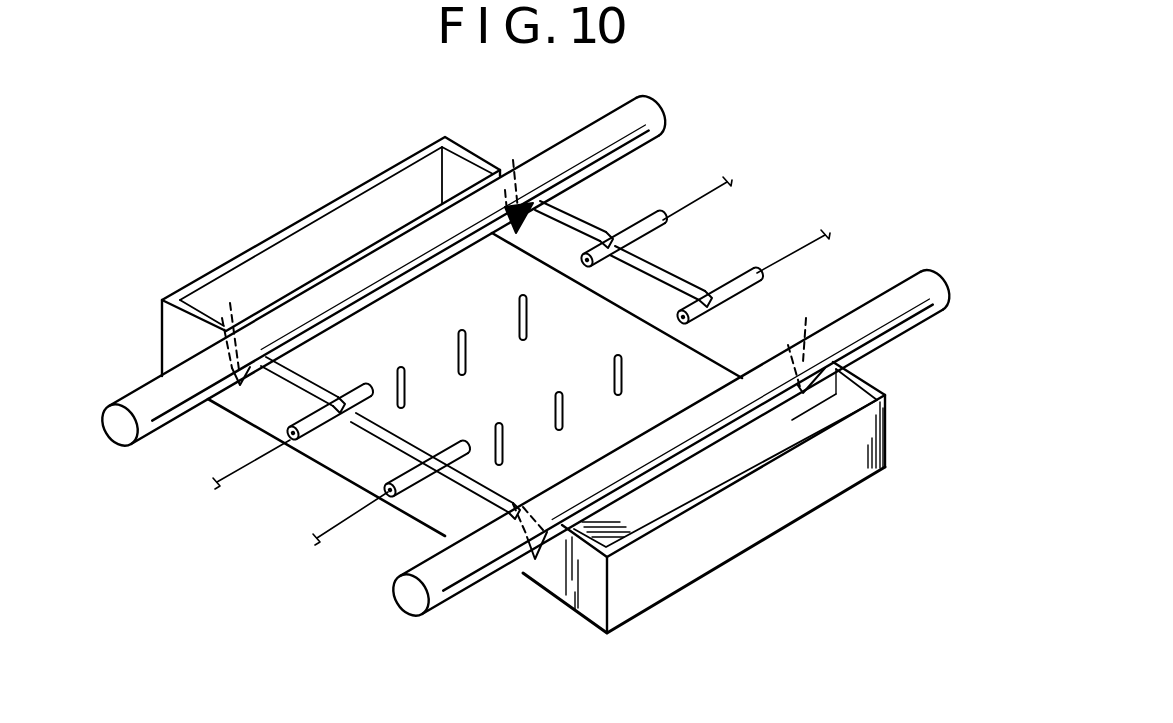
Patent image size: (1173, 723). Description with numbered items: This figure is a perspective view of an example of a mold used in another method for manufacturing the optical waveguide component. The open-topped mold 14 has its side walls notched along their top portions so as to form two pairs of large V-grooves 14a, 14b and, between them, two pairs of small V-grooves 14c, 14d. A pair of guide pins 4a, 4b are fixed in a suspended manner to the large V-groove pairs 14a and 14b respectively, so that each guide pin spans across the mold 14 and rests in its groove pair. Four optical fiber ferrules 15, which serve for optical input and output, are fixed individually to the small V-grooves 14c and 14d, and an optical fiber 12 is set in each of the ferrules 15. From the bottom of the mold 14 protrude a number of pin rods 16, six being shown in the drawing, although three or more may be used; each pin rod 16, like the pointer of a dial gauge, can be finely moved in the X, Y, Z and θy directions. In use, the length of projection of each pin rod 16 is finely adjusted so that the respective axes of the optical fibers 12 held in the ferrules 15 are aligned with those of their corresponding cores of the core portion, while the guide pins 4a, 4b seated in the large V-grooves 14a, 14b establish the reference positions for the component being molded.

The guide pin 4a is at (160, 398).
The guide pin 4b is at (449, 598).
The optical fiber 12 is at (247, 465).
The mold 14 is at (753, 532).
The large V-groove 14a is at (228, 303).
The large V-groove 14b is at (806, 318).
The small V-groove 14c is at (328, 438).
The small V-groove 14d is at (414, 498).
The optical fiber ferrule 15 is at (290, 428).
The pin rod 16 is at (405, 388).